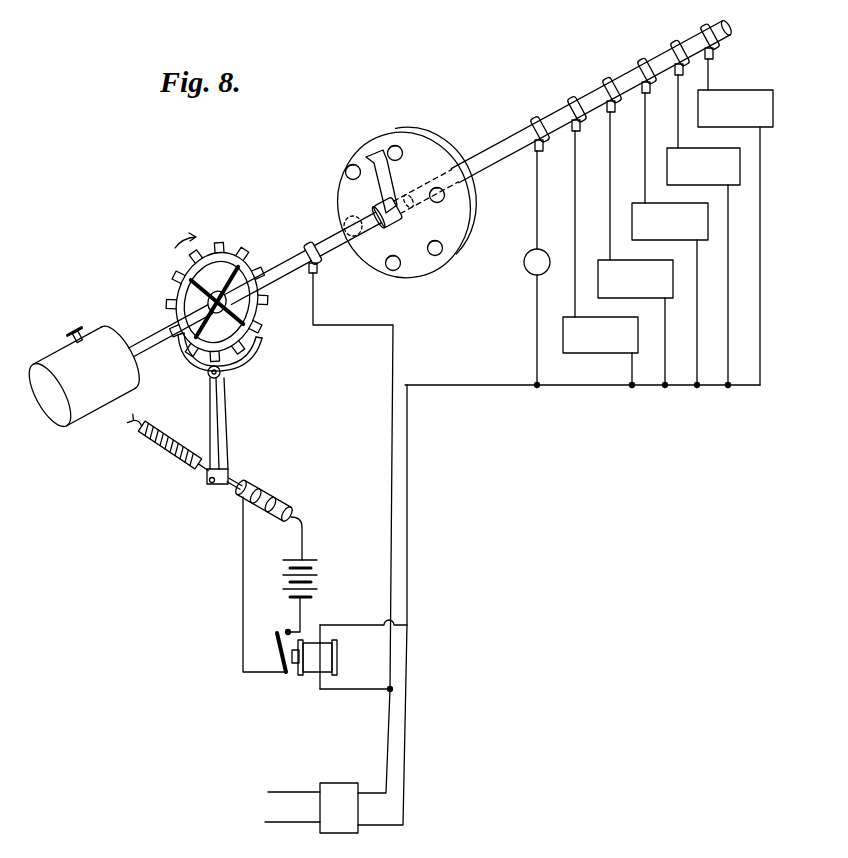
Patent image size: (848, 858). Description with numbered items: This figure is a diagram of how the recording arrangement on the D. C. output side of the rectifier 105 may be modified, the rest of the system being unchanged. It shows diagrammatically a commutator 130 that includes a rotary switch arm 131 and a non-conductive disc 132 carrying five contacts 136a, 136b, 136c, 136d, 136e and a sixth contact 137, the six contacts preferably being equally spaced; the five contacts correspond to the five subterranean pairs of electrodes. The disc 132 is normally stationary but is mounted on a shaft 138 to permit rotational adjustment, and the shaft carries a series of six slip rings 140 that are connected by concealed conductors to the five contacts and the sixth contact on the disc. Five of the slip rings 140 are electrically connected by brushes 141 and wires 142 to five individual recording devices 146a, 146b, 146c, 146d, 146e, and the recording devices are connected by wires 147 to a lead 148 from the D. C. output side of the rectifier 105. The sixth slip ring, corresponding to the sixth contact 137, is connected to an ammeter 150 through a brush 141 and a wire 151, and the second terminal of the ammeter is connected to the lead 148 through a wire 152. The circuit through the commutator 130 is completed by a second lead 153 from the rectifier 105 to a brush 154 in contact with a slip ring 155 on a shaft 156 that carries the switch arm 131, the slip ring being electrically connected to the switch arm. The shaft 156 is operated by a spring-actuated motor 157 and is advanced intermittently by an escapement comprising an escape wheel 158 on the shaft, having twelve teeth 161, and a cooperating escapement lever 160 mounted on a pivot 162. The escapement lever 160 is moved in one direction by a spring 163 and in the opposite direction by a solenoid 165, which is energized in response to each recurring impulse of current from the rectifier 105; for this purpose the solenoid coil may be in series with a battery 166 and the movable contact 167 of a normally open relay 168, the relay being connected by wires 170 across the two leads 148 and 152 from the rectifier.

The rectifier 105 is at (352, 830).
The commutator 130 is at (433, 126).
The rotary switch arm 131 is at (372, 155).
The non-conductive disc 132 is at (440, 160).
The contact 136a is at (348, 166).
The contact 136b is at (394, 146).
The contact 136c is at (445, 197).
The contact 136d is at (438, 256).
The contact 136e is at (394, 271).
The sixth contact 137 is at (345, 218).
The shaft 138 is at (509, 139).
The slip rings 140 is at (576, 98).
The brushes 141 is at (535, 148).
The wires 142 is at (607, 185).
The recording device 146a is at (735, 108).
The recording device 146b is at (703, 166).
The recording device 146c is at (670, 221).
The recording device 146d is at (635, 279).
The recording device 146e is at (600, 335).
The wires 147 is at (631, 366).
The lead 148 is at (488, 388).
The ammeter 150 is at (523, 263).
The wire 151 is at (536, 222).
The wire 152 is at (536, 338).
The second lead 153 is at (386, 754).
The brush 154 is at (318, 270).
The slip ring 155 is at (312, 245).
The shaft 156 is at (282, 268).
The spring-actuated motor 157 is at (62, 412).
The escape wheel 158 is at (212, 243).
The escapement lever 160 is at (229, 416).
The teeth 161 is at (178, 289).
The pivot 162 is at (208, 378).
The spring 163 is at (162, 448).
The solenoid 165 is at (270, 493).
The battery 166 is at (305, 560).
The movable contact 167 is at (277, 640).
The relay 168 is at (294, 686).
The wires 170 is at (349, 625).